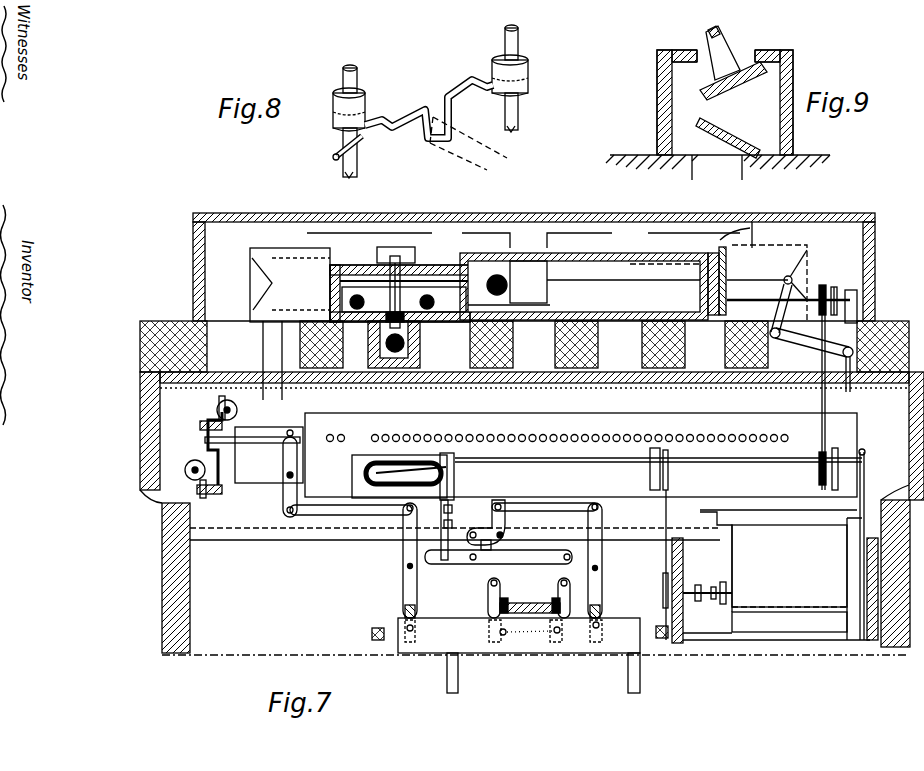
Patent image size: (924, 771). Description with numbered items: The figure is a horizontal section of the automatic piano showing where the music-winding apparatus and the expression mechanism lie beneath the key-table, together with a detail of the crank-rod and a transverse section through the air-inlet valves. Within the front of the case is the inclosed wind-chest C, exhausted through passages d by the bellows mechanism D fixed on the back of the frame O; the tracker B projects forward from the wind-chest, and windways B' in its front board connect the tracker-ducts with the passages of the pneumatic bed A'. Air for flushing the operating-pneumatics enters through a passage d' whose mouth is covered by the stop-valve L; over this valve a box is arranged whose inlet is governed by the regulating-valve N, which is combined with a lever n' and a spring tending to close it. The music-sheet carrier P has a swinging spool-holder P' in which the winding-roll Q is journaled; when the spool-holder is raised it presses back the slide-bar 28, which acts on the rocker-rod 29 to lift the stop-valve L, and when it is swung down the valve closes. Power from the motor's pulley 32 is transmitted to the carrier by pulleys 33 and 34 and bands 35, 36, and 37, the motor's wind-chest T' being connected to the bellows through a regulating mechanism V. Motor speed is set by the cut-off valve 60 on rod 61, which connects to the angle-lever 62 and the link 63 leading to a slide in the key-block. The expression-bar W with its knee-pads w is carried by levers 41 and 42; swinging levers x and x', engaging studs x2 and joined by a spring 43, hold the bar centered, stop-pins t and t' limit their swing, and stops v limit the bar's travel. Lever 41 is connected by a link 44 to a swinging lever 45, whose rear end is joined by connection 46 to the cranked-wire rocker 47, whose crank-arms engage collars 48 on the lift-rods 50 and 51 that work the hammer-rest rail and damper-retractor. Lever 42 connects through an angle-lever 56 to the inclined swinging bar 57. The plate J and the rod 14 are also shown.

In FIG. 7, the rod 14 is at (652, 591).
In FIG. 7, the slide-bar 28 is at (865, 484).
In FIG. 7, the rocker-rod 29 is at (658, 452).
In FIG. 7, the pulley 32 is at (728, 281).
In FIG. 7, the pulley 33 is at (756, 311).
In FIG. 7, the pulley 34 is at (744, 470).
In FIG. 7, the band 35 is at (739, 233).
In FIG. 7, the band 36 is at (820, 402).
In FIG. 7, the band 37 is at (666, 548).
In FIG. 7, the lever 41 is at (402, 592).
In FIG. 7, the lever 42 is at (602, 583).
In FIG. 7, the spring 43 is at (530, 599).
In FIG. 7, the link 44 is at (351, 516).
In FIG. 7, the swinging lever 45 is at (284, 490).
In FIG. 7, the connection 46 is at (254, 455).
In FIG. 8, the connection 46 is at (470, 146).
In FIG. 7, the cranked-wire rocker 47 is at (204, 448).
In FIG. 8, the cranked-wire rocker 47 is at (429, 109).
In FIG. 7, the collar 48 is at (208, 441).
In FIG. 8, the collar 48 is at (536, 78).
In FIG. 7, the lift-rod 50 is at (206, 472).
In FIG. 8, the lift-rod 50 is at (357, 72).
In FIG. 7, the lift-rod 51 is at (216, 404).
In FIG. 8, the lift-rod 51 is at (518, 36).
In FIG. 7, the angle-lever 56 is at (503, 521).
In FIG. 7, the swinging bar 57 is at (498, 561).
In FIG. 7, the cut-off valve 60 is at (517, 282).
In FIG. 7, the rod 61 is at (767, 282).
In FIG. 7, the angle-lever 62 is at (811, 325).
In FIG. 7, the link 63 is at (851, 400).
In FIG. 7, the bed A' is at (534, 354).
In FIG. 7, the tracker B is at (781, 576).
In FIG. 7, the windway B' is at (523, 237).
In FIG. 7, the wind-chest C is at (545, 479).
In FIG. 9, the wind-chest C is at (718, 117).
In FIG. 7, the bellows mechanism D is at (290, 285).
In FIG. 7, the plate J is at (581, 455).
In FIG. 9, the stop-valve L is at (700, 128).
In FIG. 7, the regulating-valve N is at (452, 476).
In FIG. 9, the regulating-valve N is at (733, 66).
In FIG. 7, the lever n' is at (446, 501).
In FIG. 7, the frame O is at (524, 346).
In FIG. 7, the music-sheet carrier P is at (775, 611).
In FIG. 7, the spool-holder P' is at (776, 629).
In FIG. 7, the winding-roll Q is at (810, 616).
In FIG. 7, the motor wind-chest T' is at (584, 286).
In FIG. 7, the regulating mechanism V is at (400, 293).
In FIG. 7, the expression-bar W is at (518, 650).
In FIG. 7, the knee-pad w is at (542, 673).
In FIG. 7, the passage d is at (264, 360).
In FIG. 9, the passage d' is at (716, 165).
In FIG. 7, the stop-pin t is at (506, 590).
In FIG. 7, the stop-pin t' is at (552, 589).
In FIG. 7, the stop v is at (668, 652).
In FIG. 7, the swinging lever x is at (484, 598).
In FIG. 7, the swinging lever x' is at (575, 598).
In FIG. 7, the stud x2 is at (530, 635).